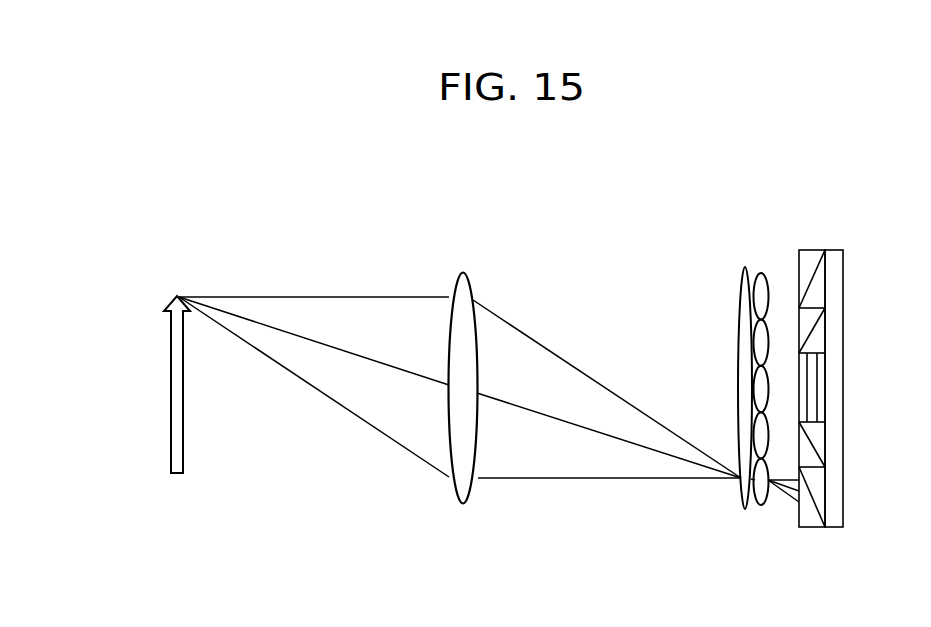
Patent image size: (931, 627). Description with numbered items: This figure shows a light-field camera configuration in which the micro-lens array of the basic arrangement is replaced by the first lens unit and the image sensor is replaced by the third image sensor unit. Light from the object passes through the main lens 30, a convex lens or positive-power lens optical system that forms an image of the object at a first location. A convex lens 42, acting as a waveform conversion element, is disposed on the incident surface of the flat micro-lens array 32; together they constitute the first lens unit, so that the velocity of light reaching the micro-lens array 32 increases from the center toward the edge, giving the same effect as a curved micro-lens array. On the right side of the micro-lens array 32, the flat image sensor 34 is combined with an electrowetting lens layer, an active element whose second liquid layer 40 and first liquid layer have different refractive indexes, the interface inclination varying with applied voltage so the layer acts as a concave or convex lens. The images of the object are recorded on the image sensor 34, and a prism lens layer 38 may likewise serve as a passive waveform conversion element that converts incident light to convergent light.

The main lens 30 is at (463, 272).
The micro-lens array 32 is at (762, 268).
The image sensor 34 is at (835, 250).
The prism lens layer 38 is at (820, 295).
The second liquid layer 40 is at (808, 257).
The convex lens 42 is at (743, 307).